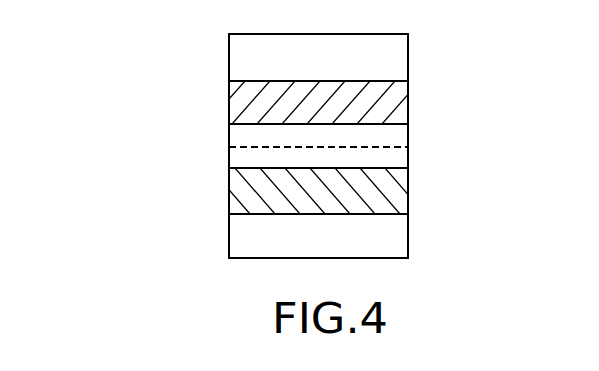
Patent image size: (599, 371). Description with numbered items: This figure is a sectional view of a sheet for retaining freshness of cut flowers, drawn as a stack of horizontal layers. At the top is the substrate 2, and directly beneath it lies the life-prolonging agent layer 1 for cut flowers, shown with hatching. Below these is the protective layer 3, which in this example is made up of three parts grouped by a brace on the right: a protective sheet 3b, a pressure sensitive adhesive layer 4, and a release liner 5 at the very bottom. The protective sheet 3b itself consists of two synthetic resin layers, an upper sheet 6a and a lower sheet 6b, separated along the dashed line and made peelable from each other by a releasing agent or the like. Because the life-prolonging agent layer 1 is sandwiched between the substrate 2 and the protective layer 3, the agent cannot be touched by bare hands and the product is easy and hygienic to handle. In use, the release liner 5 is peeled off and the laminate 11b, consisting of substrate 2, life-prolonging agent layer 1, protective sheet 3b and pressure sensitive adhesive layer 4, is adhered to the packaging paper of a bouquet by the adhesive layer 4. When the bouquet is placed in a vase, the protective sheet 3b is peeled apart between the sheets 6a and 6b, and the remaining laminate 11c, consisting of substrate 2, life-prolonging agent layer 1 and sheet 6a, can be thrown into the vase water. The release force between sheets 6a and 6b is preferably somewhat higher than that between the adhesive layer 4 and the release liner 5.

The life-prolonging agent layer 1 is at (397, 108).
The substrate 2 is at (392, 63).
The protective layer 3 is at (477, 124).
The protective sheet 3b is at (412, 147).
The pressure sensitive adhesive layer 4 is at (400, 190).
The release liner 5 is at (400, 237).
The synthetic resin sheet 6a is at (238, 133).
The synthetic resin sheet 6b is at (238, 161).
The laminate 11b is at (104, 22).
The laminate 11c is at (176, 25).